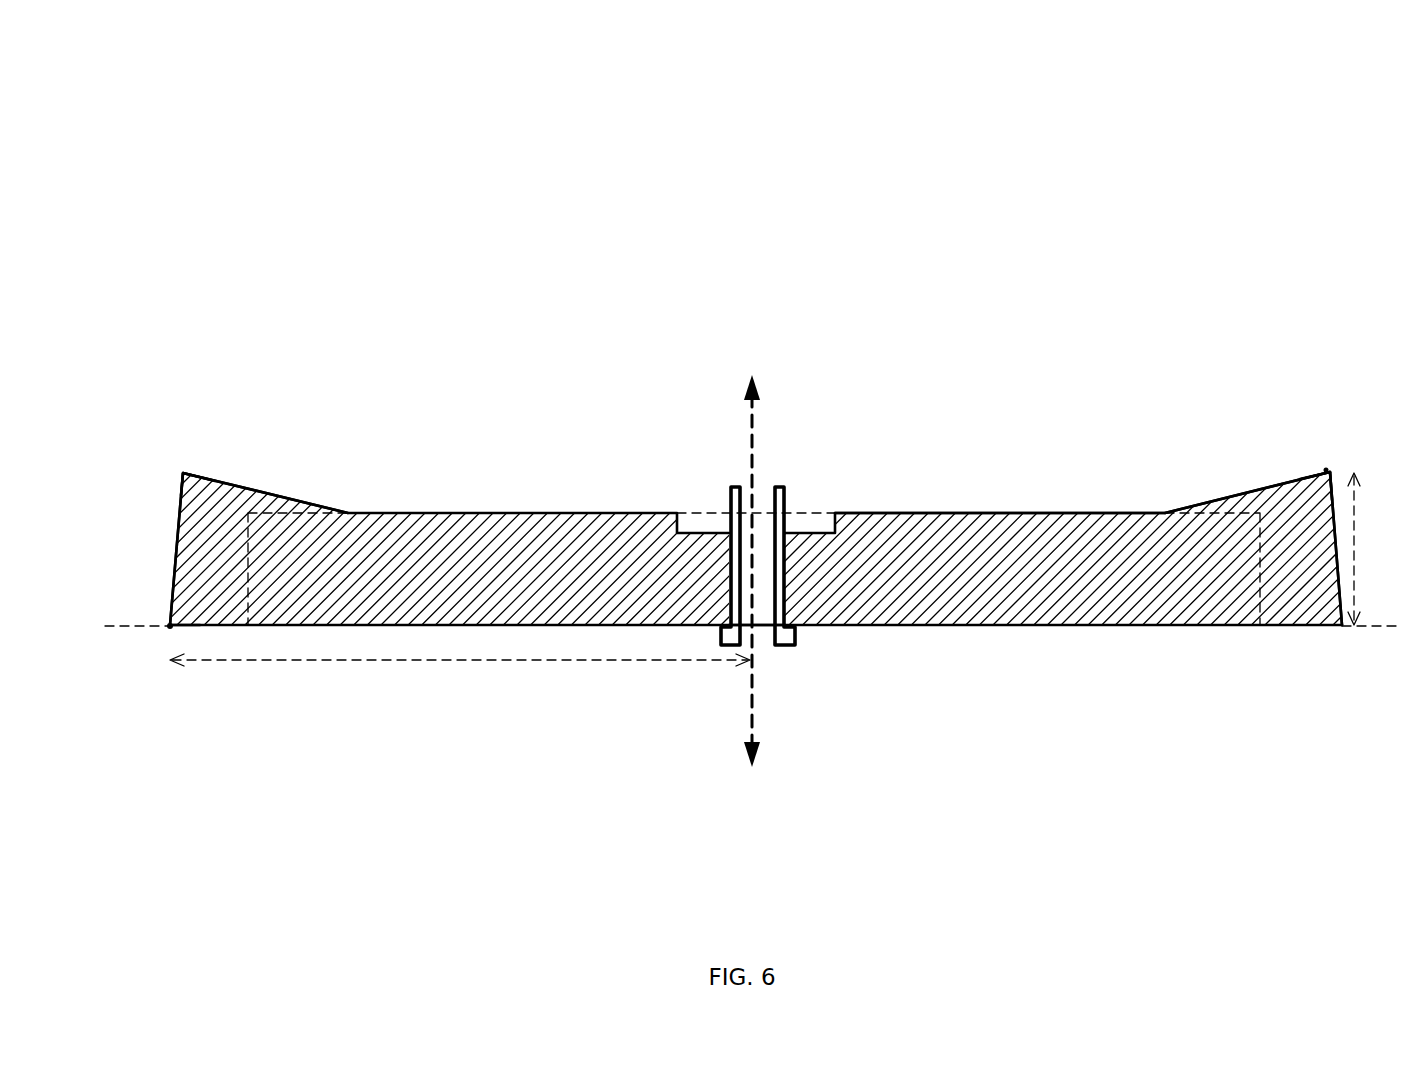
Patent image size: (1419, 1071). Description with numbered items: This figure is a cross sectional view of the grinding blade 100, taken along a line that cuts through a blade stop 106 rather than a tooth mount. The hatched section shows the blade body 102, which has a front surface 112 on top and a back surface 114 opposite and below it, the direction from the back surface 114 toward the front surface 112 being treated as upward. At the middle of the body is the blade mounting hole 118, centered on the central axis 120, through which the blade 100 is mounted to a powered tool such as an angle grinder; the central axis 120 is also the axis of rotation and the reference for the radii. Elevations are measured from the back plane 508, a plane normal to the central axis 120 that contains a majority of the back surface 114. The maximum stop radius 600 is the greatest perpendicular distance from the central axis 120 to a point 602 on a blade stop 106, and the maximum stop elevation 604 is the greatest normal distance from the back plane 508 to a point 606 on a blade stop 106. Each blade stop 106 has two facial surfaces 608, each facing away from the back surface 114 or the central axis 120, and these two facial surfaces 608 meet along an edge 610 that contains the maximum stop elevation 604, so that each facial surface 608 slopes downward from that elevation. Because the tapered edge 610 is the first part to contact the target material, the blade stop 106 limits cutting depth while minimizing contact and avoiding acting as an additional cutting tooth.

The grinding blade 100 is at (1255, 181).
The blade body 102 is at (690, 511).
The blade stop 106 is at (1299, 500).
The front surface 112 is at (1002, 480).
The back surface 114 is at (997, 655).
The blade mounting hole 118 is at (772, 485).
The central axis 120 is at (755, 727).
The back plane 508 is at (127, 626).
The maximum stop radius 600 is at (478, 663).
The point on blade stop 602 is at (167, 630).
The maximum stop elevation 604 is at (1352, 503).
The point on blade stop 606 is at (1325, 468).
The facial surface 608 is at (177, 537).
The edge 610 is at (183, 473).